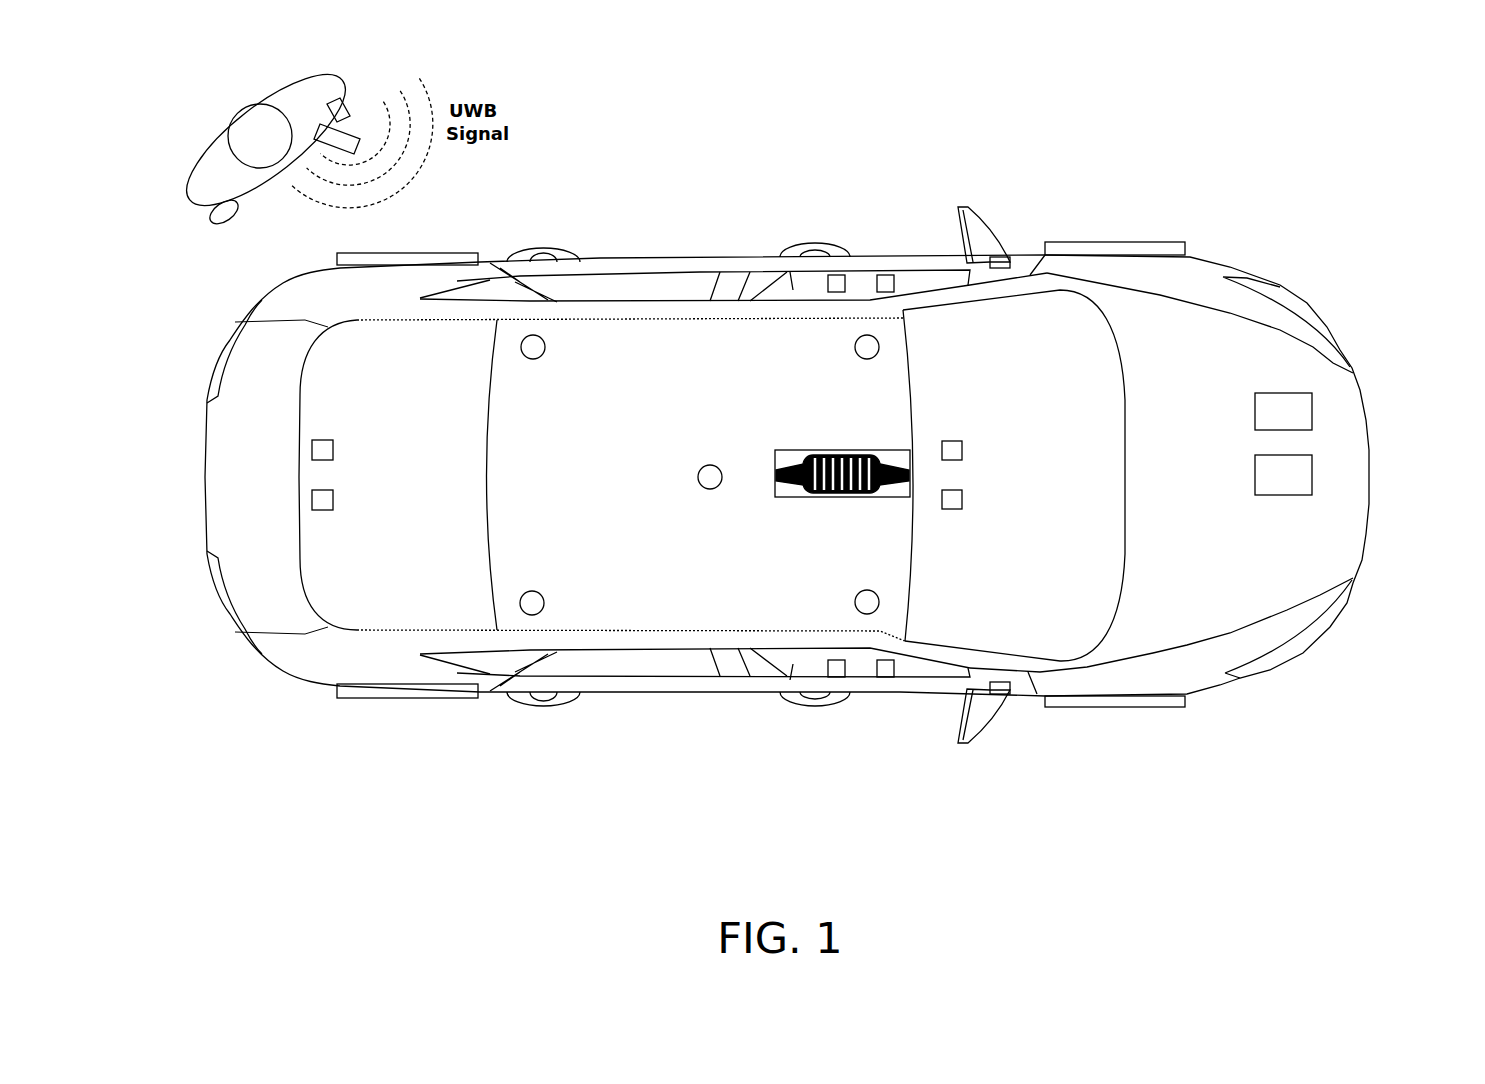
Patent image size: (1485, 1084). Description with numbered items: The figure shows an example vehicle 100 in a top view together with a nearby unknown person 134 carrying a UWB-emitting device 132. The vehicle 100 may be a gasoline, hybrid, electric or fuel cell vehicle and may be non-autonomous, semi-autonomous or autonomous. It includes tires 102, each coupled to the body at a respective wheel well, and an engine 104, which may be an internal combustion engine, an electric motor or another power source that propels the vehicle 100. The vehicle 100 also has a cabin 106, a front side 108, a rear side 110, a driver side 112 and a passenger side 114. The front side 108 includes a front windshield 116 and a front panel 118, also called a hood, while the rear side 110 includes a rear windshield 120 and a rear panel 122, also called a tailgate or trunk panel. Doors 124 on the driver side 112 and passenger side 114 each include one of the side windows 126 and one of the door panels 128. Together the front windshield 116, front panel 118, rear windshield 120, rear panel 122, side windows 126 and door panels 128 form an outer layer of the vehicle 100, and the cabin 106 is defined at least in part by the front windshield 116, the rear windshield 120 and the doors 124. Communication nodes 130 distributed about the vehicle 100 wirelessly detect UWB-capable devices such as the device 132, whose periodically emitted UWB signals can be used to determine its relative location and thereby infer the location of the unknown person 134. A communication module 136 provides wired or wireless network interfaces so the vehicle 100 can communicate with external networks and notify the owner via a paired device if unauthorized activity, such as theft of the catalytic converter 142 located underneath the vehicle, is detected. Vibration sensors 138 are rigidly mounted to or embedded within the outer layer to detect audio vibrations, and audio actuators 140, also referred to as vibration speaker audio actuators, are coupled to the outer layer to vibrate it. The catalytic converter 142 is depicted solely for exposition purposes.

The vehicle 100 is at (1057, 125).
The tires 102 is at (410, 254).
The engine 104 is at (1263, 487).
The cabin 106 is at (691, 524).
The front side 108 is at (1392, 468).
The rear side 110 is at (178, 476).
The driver side 112 is at (661, 152).
The passenger side 114 is at (660, 797).
The front windshield 116 is at (1014, 489).
The front panel 118 is at (1174, 489).
The rear windshield 120 is at (384, 489).
The rear panel 122 is at (229, 489).
The doors 124 is at (758, 235).
The side windows 126 is at (792, 287).
The door panels 128 is at (913, 263).
The communication nodes 130 is at (533, 359).
The device 132 is at (345, 120).
The unknown person 134 is at (207, 148).
The communication module 136 is at (1263, 424).
The vibration sensors 138 is at (836, 276).
The audio actuators 140 is at (886, 276).
The catalytic converter 142 is at (800, 450).